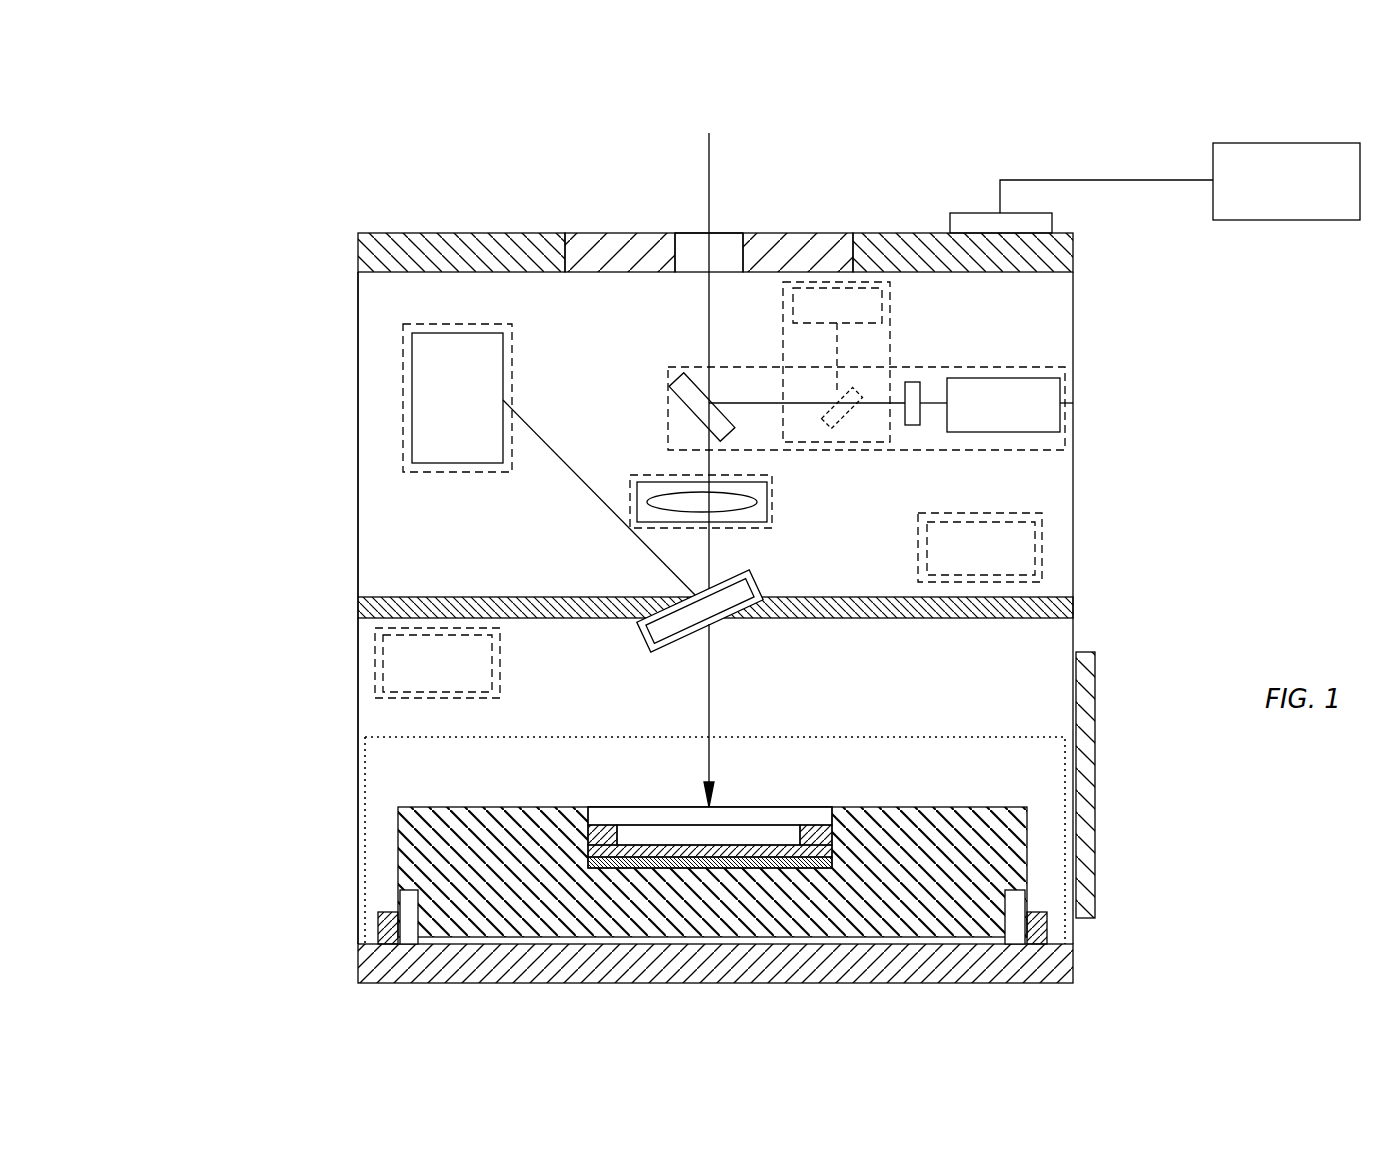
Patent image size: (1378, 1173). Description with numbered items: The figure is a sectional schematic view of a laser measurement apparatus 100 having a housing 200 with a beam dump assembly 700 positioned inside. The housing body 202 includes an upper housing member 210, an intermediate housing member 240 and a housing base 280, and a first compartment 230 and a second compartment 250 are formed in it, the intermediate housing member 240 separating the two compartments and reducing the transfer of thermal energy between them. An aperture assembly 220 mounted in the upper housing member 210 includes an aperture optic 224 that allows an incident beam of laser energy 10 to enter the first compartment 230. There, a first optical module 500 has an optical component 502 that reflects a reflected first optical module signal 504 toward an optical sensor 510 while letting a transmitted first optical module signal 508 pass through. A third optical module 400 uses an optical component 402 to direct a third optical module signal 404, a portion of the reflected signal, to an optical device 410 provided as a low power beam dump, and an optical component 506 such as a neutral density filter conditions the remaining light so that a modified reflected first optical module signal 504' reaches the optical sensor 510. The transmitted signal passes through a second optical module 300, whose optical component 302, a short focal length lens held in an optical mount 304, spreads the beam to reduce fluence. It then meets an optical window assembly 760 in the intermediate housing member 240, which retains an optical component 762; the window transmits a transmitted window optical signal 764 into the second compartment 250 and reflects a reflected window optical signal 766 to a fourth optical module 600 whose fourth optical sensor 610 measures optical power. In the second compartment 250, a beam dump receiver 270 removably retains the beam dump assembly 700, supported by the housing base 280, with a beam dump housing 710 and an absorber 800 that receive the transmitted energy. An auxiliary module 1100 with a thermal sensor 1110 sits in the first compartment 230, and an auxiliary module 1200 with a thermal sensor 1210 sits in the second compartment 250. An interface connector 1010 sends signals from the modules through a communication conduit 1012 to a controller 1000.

The laser measurement apparatus 100 is at (338, 172).
The housing 200 is at (215, 452).
The beam dump assembly 700 is at (285, 866).
The incident beam of laser energy 10 is at (709, 194).
The upper housing member 210 is at (358, 246).
The aperture assembly 220 is at (797, 233).
The aperture optic 224 is at (725, 233).
The housing body 202 is at (358, 412).
The first compartment 230 is at (380, 550).
The intermediate housing member 240 is at (458, 597).
The second compartment 250 is at (370, 725).
The beam dump receiver 270 is at (943, 737).
The housing base 280 is at (358, 965).
The fourth optical module 600 is at (403, 350).
The fourth optical sensor 610 is at (433, 409).
The reflected window optical signal 766 is at (595, 497).
The third optical module 400 is at (890, 305).
The optical device 410 is at (813, 320).
The third optical module signal 404 is at (837, 347).
The optical component 402 is at (835, 405).
The first optical module 500 is at (1065, 403).
The optical sensor 510 is at (979, 419).
The reflected first optical module signal 504 is at (807, 362).
The modified reflected first optical module signal 504' is at (977, 446).
The optical component 506 is at (913, 427).
The optical component 502 is at (678, 397).
The transmitted first optical module signal 508 is at (700, 458).
The second optical module 300 is at (758, 527).
The optical mount 304 is at (772, 487).
The optical component 302 is at (768, 500).
The auxiliary module 1100 is at (1042, 548).
The thermal sensor 1110 is at (949, 561).
The auxiliary module 1200 is at (375, 660).
The thermal sensor 1210 is at (405, 677).
The optical window assembly 760 is at (637, 632).
The optical component 762 is at (670, 637).
The transmitted window optical signal 764 is at (713, 702).
The beam dump housing 710 is at (455, 807).
The absorber 800 is at (618, 800).
The interface connector 1010 is at (968, 213).
The communication conduit 1012 is at (1108, 180).
The controller 1000 is at (1254, 196).